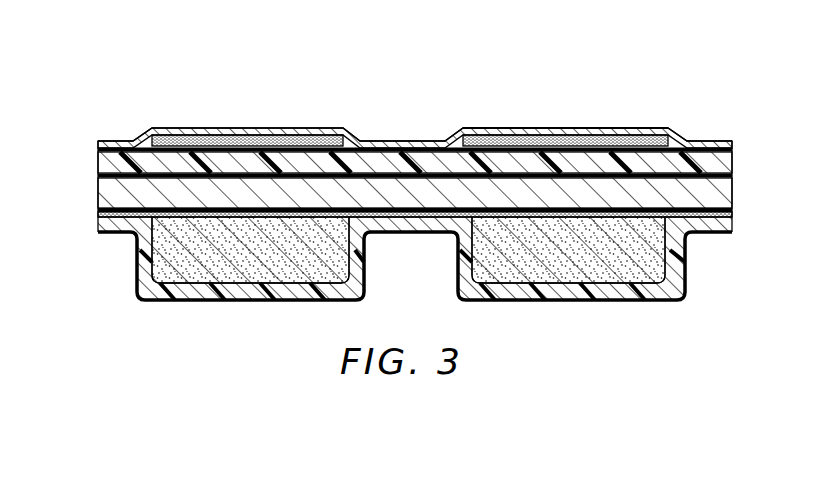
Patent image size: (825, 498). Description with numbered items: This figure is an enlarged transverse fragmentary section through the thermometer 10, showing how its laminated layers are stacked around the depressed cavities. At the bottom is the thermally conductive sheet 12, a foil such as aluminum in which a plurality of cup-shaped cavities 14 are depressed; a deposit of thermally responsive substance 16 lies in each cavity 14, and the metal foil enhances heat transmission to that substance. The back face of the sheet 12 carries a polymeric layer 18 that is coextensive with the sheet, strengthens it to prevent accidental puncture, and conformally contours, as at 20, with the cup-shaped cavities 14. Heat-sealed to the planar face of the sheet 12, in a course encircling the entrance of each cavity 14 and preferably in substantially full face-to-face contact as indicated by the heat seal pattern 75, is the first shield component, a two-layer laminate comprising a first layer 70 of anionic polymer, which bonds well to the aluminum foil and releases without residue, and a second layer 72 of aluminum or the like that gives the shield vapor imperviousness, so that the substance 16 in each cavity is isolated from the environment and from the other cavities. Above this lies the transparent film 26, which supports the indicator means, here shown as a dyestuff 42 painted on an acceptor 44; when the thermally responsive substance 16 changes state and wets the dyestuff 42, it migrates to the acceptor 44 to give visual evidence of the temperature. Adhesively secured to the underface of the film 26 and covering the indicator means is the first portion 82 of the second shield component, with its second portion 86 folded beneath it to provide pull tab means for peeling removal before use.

The thermometer 10 is at (504, 104).
The thermally conductive sheet 12 is at (430, 219).
The cup-shaped cavity 14 is at (668, 262).
The thermally responsive substance 16 is at (218, 265).
The layer 18 is at (607, 300).
The conformal contour 20 is at (679, 292).
The transparent film 26 is at (558, 128).
The dyestuff 42 is at (461, 135).
The acceptor 44 is at (489, 130).
The first layer 70 is at (98, 200).
The second layer 72 is at (733, 203).
The heat seal pattern 75 is at (112, 224).
The first portion of second shield component 82 is at (99, 150).
The second portion of second shield component 86 is at (98, 167).